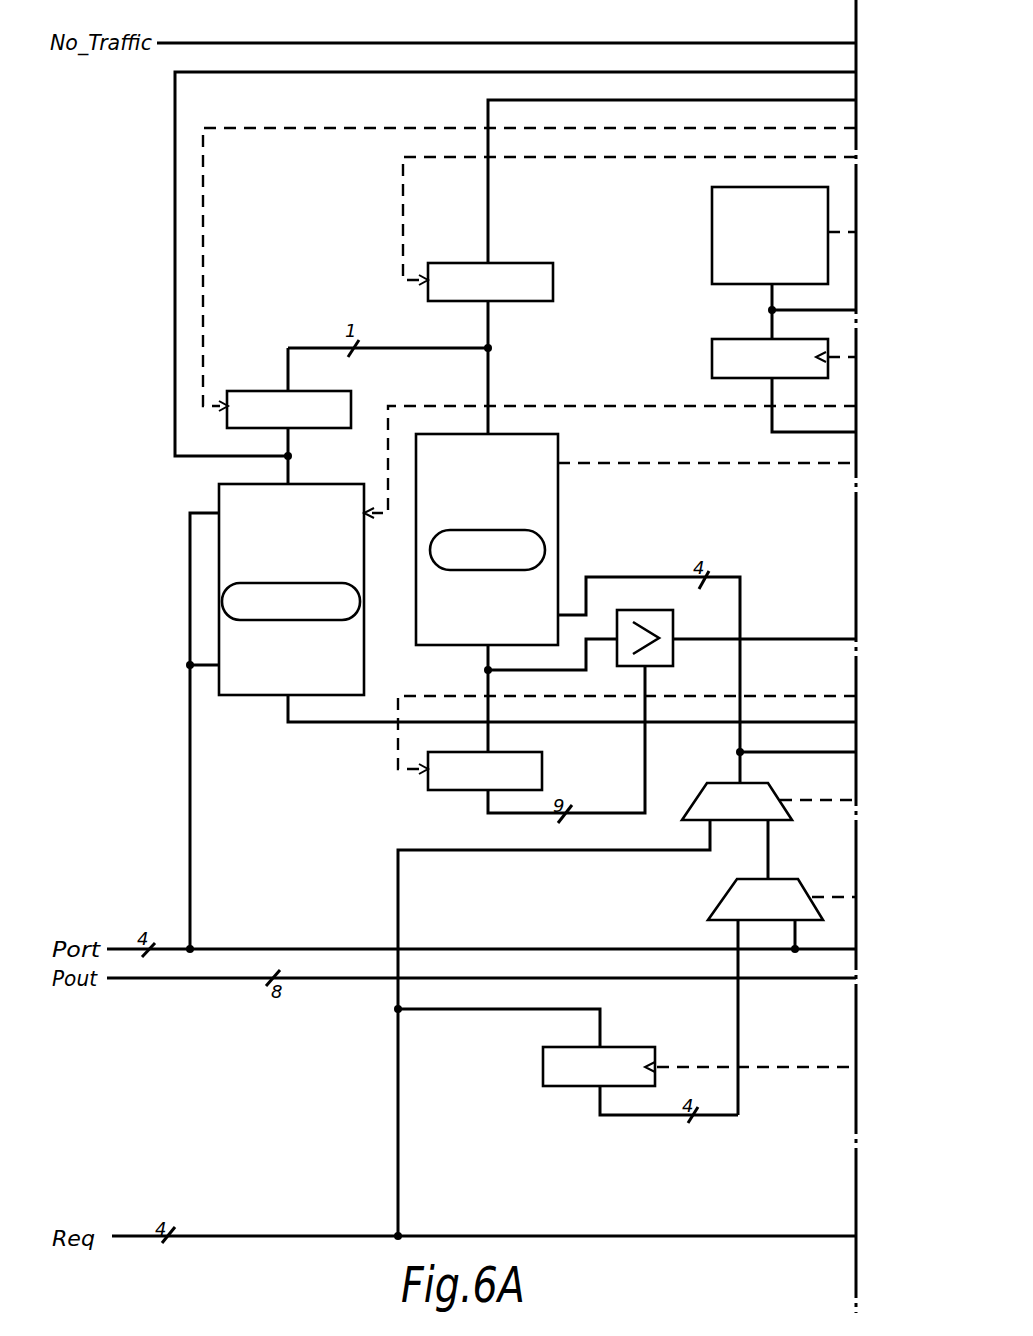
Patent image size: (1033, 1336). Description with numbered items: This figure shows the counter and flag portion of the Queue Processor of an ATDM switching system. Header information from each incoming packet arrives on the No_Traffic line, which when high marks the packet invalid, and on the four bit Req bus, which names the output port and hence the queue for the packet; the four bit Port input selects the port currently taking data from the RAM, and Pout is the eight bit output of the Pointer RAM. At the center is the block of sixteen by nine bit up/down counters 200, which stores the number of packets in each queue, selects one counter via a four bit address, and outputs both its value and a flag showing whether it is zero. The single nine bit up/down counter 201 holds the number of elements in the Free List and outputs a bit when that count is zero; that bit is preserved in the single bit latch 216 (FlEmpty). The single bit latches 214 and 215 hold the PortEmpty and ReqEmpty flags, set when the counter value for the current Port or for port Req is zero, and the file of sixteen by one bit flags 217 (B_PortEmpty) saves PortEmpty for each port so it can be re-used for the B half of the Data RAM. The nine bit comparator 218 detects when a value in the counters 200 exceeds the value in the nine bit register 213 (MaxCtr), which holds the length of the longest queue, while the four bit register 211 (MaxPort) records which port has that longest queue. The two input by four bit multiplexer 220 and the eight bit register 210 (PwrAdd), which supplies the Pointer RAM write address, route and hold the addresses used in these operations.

The block of 16×9 bit up/down counters 200 is at (636, 553).
The 9 bit up/down counter 201 is at (784, 223).
The 8 bit register 210 is at (769, 789).
The 4 bit register 211 is at (699, 1082).
The 9 bit register 213 is at (485, 785).
The single bit latch 214 is at (289, 396).
The single bit latch 215 is at (490, 269).
The single bit latch 216 is at (784, 346).
The file of 16×1 bit flags 217 is at (292, 577).
The 9 bit comparator 218 is at (736, 625).
The 2 input×4 bit multiplexer 220 is at (782, 886).